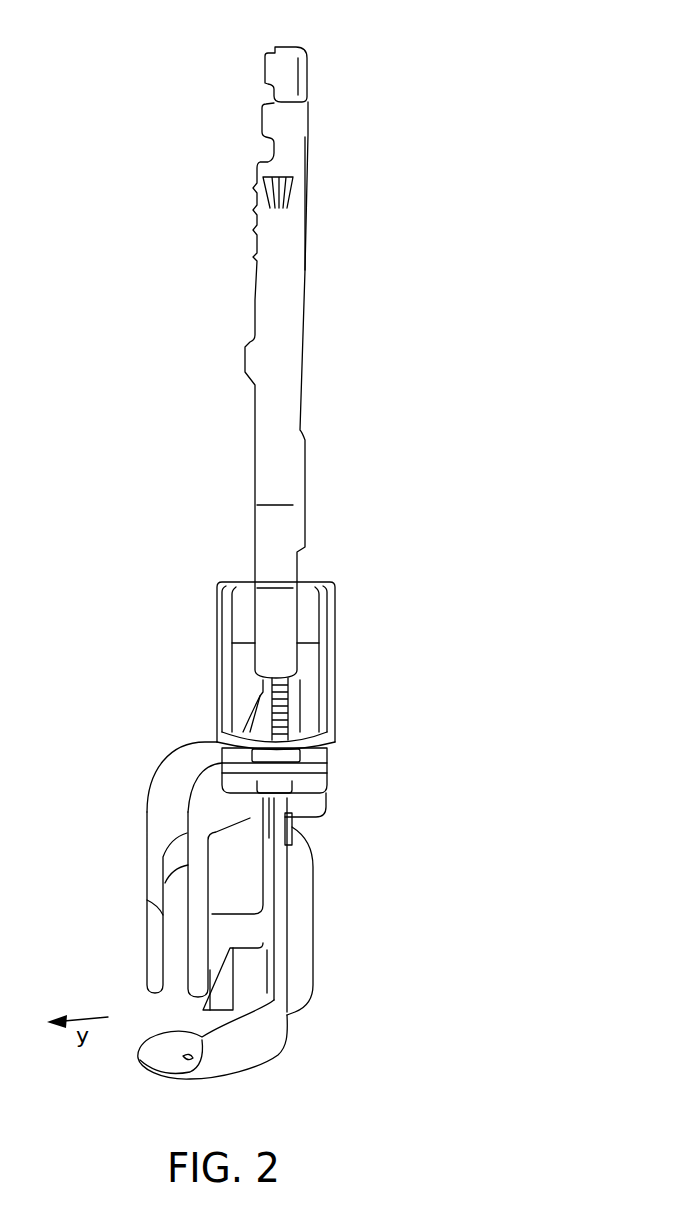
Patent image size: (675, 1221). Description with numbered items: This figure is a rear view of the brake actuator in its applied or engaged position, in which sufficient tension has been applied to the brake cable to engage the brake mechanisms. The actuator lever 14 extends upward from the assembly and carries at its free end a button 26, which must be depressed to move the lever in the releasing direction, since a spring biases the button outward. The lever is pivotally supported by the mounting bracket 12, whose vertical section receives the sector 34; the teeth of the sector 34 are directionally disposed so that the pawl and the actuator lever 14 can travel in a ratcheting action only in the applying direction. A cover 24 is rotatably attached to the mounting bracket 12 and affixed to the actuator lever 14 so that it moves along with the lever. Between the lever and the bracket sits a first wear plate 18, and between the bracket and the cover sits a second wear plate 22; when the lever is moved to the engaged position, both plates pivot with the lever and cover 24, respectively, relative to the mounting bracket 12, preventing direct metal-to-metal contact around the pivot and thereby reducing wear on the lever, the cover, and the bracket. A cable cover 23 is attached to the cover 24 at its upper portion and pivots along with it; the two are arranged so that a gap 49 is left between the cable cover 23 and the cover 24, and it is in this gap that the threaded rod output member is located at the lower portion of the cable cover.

The mounting bracket 12 is at (277, 897).
The actuator lever 14 is at (292, 295).
The first wear plate 18 is at (292, 820).
The second wear plate 22 is at (263, 808).
The cable cover 23 is at (177, 790).
The cover 24 is at (210, 813).
The button 26 is at (285, 73).
The sector 34 is at (280, 703).
The gap 49 is at (175, 940).